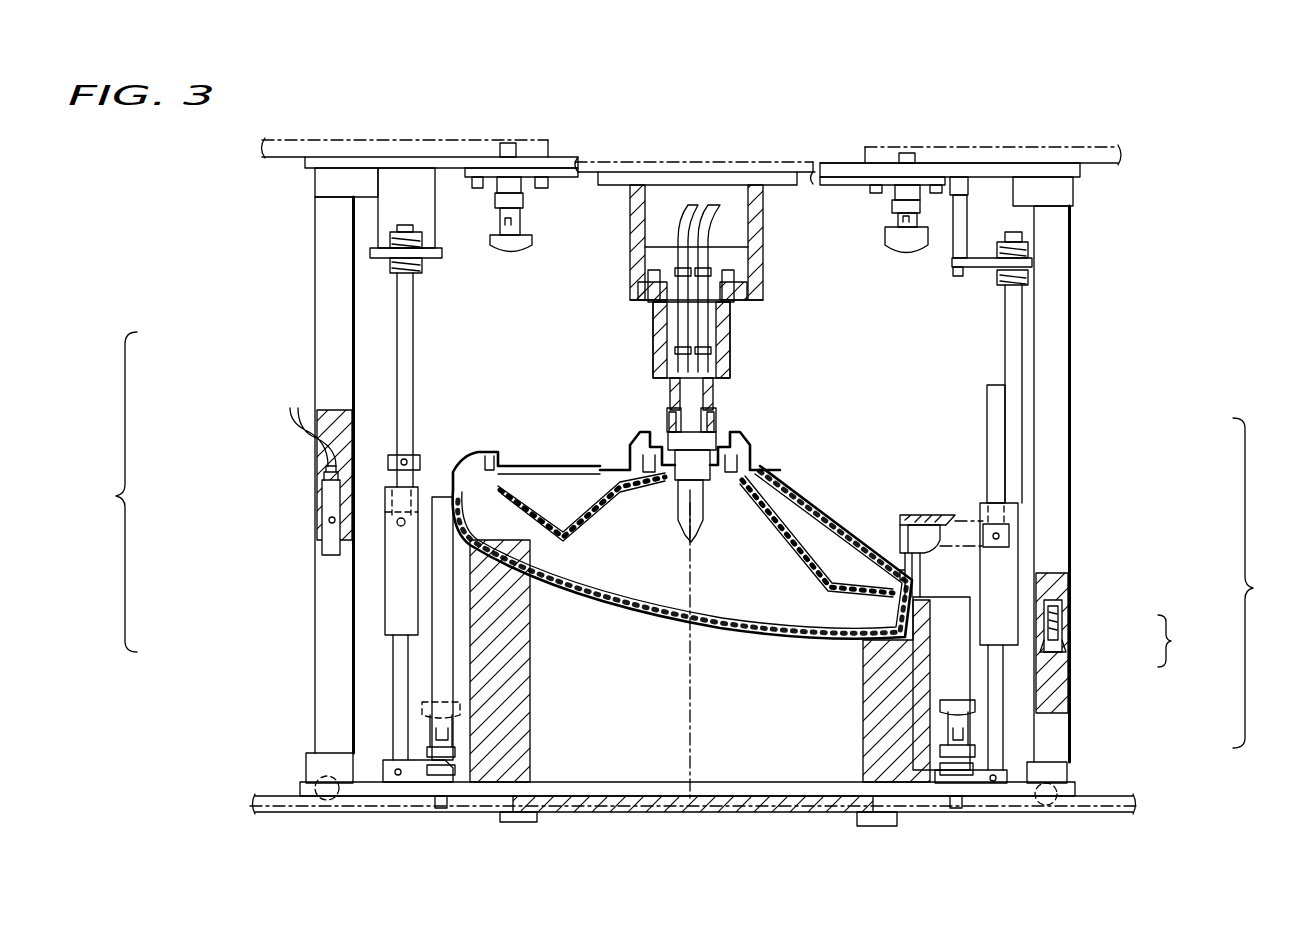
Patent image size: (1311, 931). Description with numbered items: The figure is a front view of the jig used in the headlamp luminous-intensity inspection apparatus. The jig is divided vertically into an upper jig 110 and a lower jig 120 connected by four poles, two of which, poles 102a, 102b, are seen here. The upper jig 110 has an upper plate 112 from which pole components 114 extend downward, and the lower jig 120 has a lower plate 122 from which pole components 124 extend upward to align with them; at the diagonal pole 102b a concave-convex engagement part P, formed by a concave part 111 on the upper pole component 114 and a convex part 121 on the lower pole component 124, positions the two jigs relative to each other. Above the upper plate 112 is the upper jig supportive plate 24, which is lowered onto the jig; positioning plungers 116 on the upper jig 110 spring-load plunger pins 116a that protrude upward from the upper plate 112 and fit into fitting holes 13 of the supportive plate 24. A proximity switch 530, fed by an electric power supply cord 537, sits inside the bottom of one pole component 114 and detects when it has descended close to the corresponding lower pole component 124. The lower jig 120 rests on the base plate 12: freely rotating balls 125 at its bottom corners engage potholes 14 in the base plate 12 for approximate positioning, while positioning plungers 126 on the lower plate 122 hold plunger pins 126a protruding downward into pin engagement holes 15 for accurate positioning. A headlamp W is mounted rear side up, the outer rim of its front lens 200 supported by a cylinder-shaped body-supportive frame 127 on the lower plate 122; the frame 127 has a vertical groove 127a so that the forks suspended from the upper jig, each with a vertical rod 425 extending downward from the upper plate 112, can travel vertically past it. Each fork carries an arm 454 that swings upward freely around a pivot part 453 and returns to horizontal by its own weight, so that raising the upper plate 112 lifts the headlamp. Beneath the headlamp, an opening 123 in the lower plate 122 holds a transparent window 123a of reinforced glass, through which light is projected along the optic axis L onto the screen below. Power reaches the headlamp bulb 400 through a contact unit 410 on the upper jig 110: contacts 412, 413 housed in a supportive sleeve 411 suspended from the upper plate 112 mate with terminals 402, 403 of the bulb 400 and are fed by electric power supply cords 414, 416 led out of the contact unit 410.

The upper jig supportive plate 24 is at (1078, 145).
The upper plate 112 is at (322, 157).
The upper jig 110 is at (312, 222).
The pole components 114 is at (312, 355).
The proximity switch 530 is at (322, 505).
The electric power supply cord 537 is at (288, 425).
The pole 102a is at (101, 492).
The pole 102b is at (1271, 583).
The plunger pins 116a is at (512, 143).
The fitting holes 13 is at (507, 140).
The positioning plungers 116 is at (494, 224).
The screw shaft 425 is at (394, 325).
The body-supportive frame 127 is at (428, 660).
The vertical groove 127a is at (395, 708).
The pole components 124 is at (312, 605).
The lower jig 120 is at (290, 688).
The positioning plungers 126 is at (425, 727).
The plunger pins 126a is at (441, 812).
The arm 454 is at (411, 780).
The pivot part 453 is at (397, 777).
The lower plate 122 is at (745, 800).
The opening 123 is at (852, 792).
The transparent window 123a is at (612, 816).
The base plate 12 is at (1120, 812).
The potholes 14 is at (330, 800).
The pin engagement holes 15 is at (452, 818).
The non-directional balls 125 is at (318, 780).
The concave part 111 is at (1062, 614).
The convex part 121 is at (1062, 644).
The concave-convex engagement part P is at (1174, 641).
The supportive sleeve 411 is at (762, 192).
The electric power supply cord 414 is at (680, 210).
The electric power supply cord 416 is at (707, 205).
The contact unit 410 is at (655, 320).
The contact 412 is at (680, 390).
The contact 413 is at (712, 390).
The terminal 402 is at (668, 442).
The terminal 403 is at (716, 442).
The headlamp bulb 400 is at (685, 515).
The optic axis L is at (692, 718).
The headlamp W is at (818, 562).
The front lens 200 is at (607, 597).